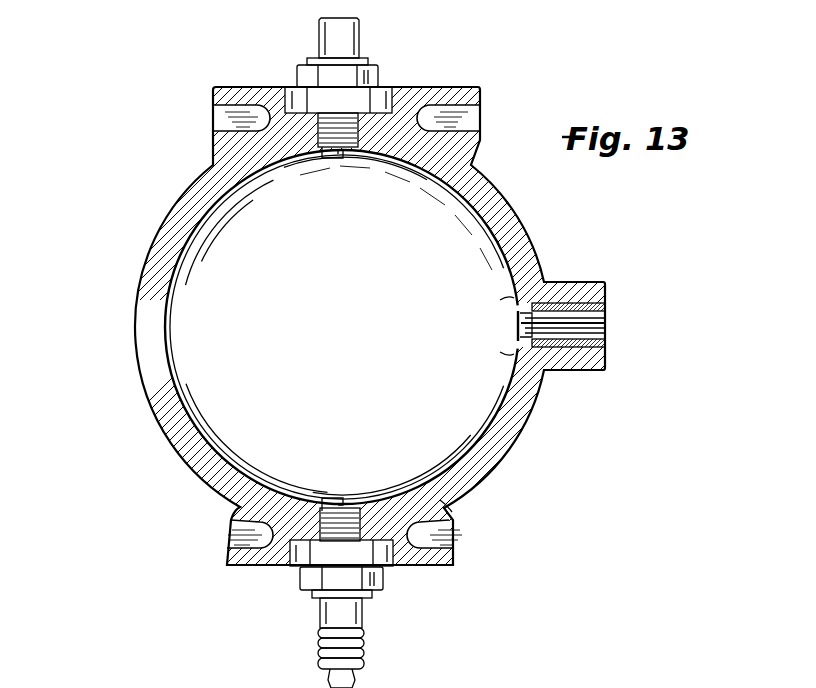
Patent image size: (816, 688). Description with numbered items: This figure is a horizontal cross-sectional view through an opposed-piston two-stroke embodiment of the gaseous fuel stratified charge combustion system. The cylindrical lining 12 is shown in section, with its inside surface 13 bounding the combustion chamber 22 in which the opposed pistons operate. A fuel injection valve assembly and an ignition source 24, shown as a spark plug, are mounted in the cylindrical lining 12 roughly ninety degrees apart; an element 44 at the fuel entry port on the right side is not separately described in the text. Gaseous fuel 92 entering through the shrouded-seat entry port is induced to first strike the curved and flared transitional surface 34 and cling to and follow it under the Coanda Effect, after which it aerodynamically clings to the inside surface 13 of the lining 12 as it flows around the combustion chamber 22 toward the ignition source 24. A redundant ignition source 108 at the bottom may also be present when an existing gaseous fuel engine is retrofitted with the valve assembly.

The cylindrical lining 12 is at (148, 333).
The inside surface 13 is at (455, 215).
The combustion chamber 22 is at (318, 324).
The ignition source 24 is at (400, 90).
The transitional surface 34 is at (528, 262).
The nozzle insert 44 is at (548, 350).
The gaseous fuel 92 is at (503, 203).
The redundant ignition source 108 is at (447, 505).